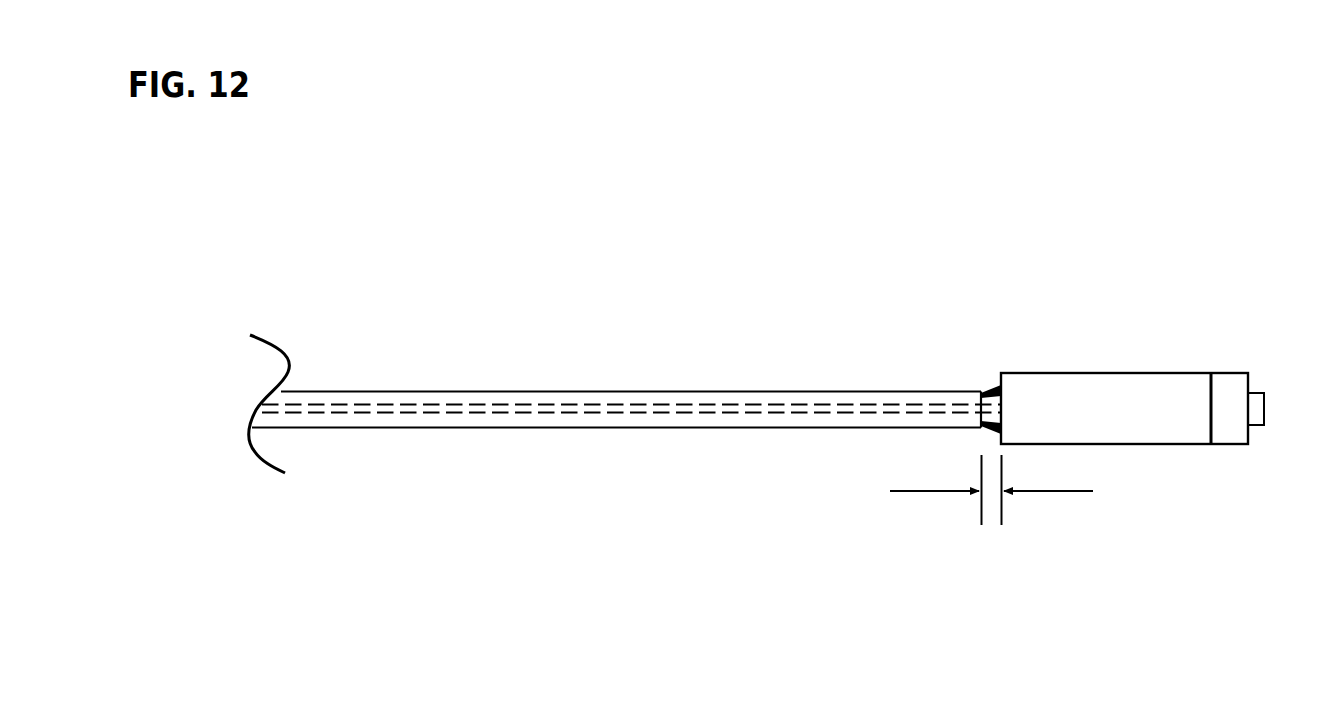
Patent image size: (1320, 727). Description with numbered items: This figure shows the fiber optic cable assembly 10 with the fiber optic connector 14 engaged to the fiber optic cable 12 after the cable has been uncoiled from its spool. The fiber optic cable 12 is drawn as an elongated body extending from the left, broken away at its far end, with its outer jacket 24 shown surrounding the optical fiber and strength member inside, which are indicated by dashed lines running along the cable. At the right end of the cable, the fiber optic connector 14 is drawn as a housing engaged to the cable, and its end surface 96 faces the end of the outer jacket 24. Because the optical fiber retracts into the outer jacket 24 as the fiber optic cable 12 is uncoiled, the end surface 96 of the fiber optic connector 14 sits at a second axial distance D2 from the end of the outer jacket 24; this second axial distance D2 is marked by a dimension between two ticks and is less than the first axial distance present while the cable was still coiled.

The fiber optic cable assembly 10 is at (693, 266).
The fiber optic cable 12 is at (586, 386).
The outer jacket 24 is at (833, 428).
The end surface 96 is at (1000, 378).
The fiber optic connector 14 is at (1153, 360).
The second axial distance D2 is at (1048, 491).